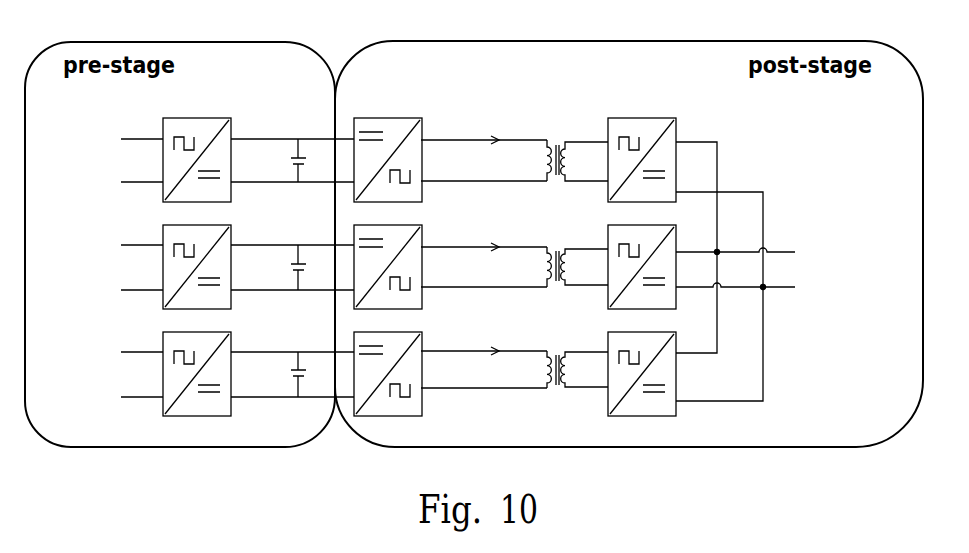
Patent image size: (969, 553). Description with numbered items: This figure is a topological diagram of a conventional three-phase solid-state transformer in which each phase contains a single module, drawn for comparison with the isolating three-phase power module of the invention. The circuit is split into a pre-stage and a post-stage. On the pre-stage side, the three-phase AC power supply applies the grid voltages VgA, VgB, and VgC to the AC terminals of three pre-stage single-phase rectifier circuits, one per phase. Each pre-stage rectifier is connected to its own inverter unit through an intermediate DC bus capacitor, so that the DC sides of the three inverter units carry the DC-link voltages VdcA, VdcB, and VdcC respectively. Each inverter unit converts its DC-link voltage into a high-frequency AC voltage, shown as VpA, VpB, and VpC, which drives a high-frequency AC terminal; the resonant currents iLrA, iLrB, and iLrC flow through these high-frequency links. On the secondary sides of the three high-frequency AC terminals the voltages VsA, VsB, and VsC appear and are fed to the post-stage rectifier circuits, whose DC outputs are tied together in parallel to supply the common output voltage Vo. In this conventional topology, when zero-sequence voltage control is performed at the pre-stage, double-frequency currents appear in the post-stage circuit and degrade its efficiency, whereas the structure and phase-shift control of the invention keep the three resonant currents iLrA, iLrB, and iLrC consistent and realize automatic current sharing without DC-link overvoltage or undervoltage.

The phase A grid voltage VgA is at (125, 160).
The phase B grid voltage VgB is at (125, 267).
The phase C grid voltage VgC is at (125, 374).
The phase A DC-link voltage VdcA is at (303, 144).
The phase B DC-link voltage VdcB is at (302, 251).
The phase C DC-link voltage VdcC is at (295, 358).
The phase A inverter output AC voltage VpA is at (484, 160).
The phase B inverter output AC voltage VpB is at (484, 267).
The phase C inverter output AC voltage VpC is at (484, 370).
The phase A resonant current iLrA is at (496, 123).
The phase B resonant current iLrB is at (495, 230).
The phase C resonant current iLrC is at (496, 335).
The phase A secondary-side voltage VsA is at (584, 161).
The phase B secondary-side voltage VsB is at (584, 267).
The phase C secondary-side voltage VsC is at (584, 371).
The output voltage Vo is at (751, 271).